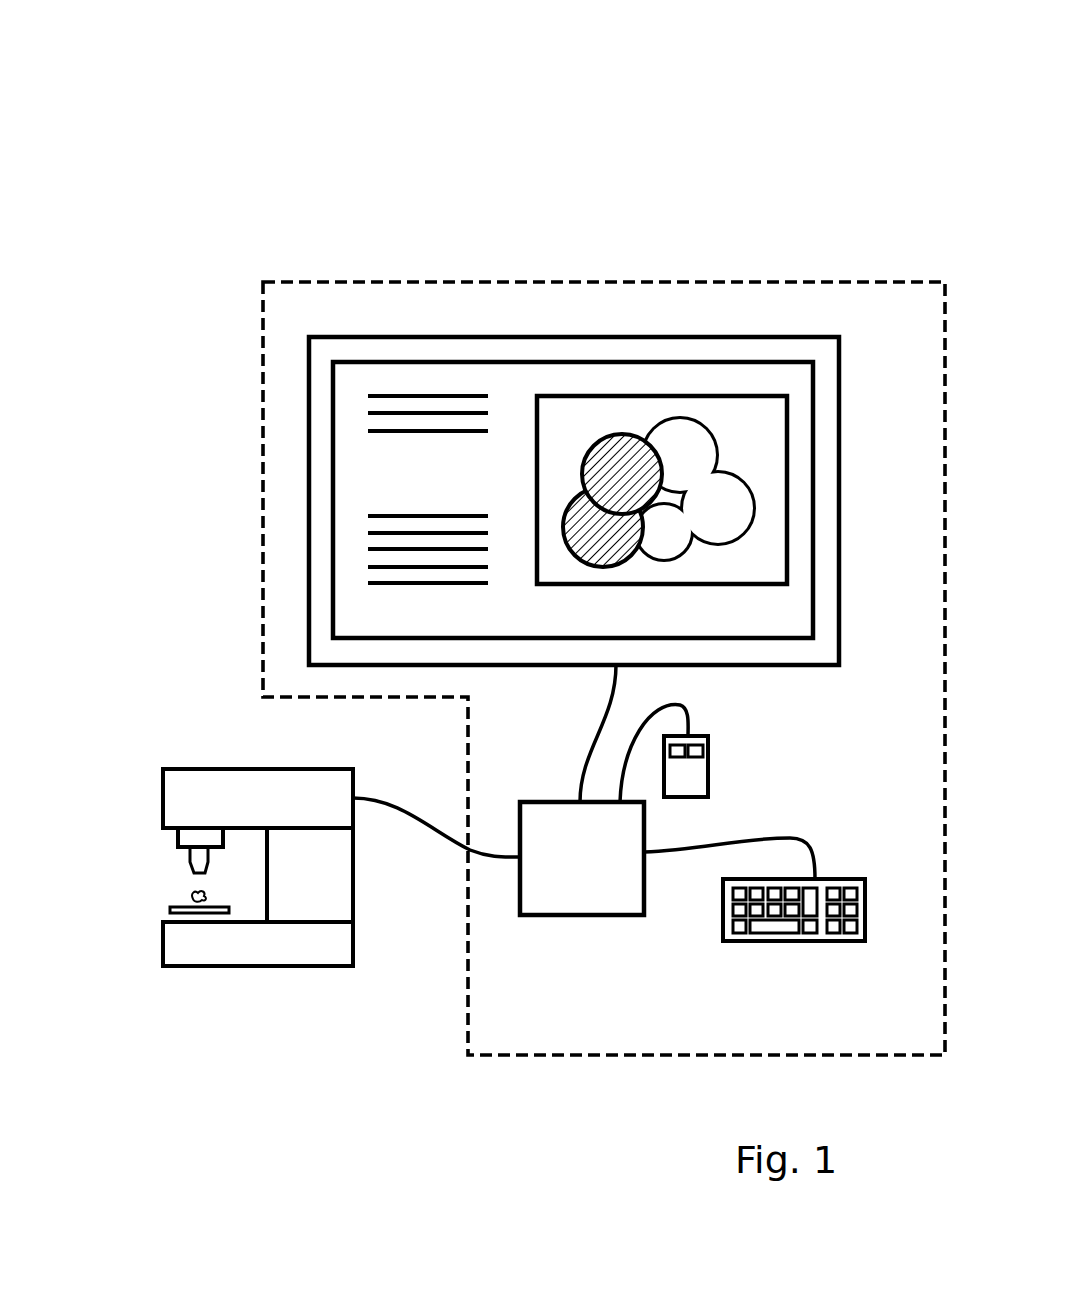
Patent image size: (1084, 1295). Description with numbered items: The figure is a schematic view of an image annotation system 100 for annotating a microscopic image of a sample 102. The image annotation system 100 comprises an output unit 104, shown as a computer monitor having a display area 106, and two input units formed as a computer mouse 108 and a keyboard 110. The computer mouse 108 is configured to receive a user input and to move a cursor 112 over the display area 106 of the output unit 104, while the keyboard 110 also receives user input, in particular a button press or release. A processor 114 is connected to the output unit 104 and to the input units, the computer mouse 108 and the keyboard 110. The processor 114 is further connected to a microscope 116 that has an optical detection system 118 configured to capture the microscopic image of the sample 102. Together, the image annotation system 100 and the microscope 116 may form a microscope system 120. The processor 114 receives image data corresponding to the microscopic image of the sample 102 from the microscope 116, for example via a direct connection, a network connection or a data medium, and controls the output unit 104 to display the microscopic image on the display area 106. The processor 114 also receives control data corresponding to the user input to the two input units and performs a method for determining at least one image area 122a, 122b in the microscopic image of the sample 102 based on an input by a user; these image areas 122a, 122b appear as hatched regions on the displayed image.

The microscope system 120 is at (772, 86).
The image annotation system 100 is at (350, 279).
The output unit 104 is at (630, 328).
The display area 106 is at (333, 581).
The cursor 112 is at (720, 499).
The image area 122a is at (571, 492).
The image area 122b is at (637, 436).
The processor 114 is at (584, 790).
The computer mouse 108 is at (709, 763).
The keyboard 110 is at (802, 941).
The microscope 116 is at (286, 975).
The optical detection system 118 is at (178, 840).
The sample 102 is at (192, 896).